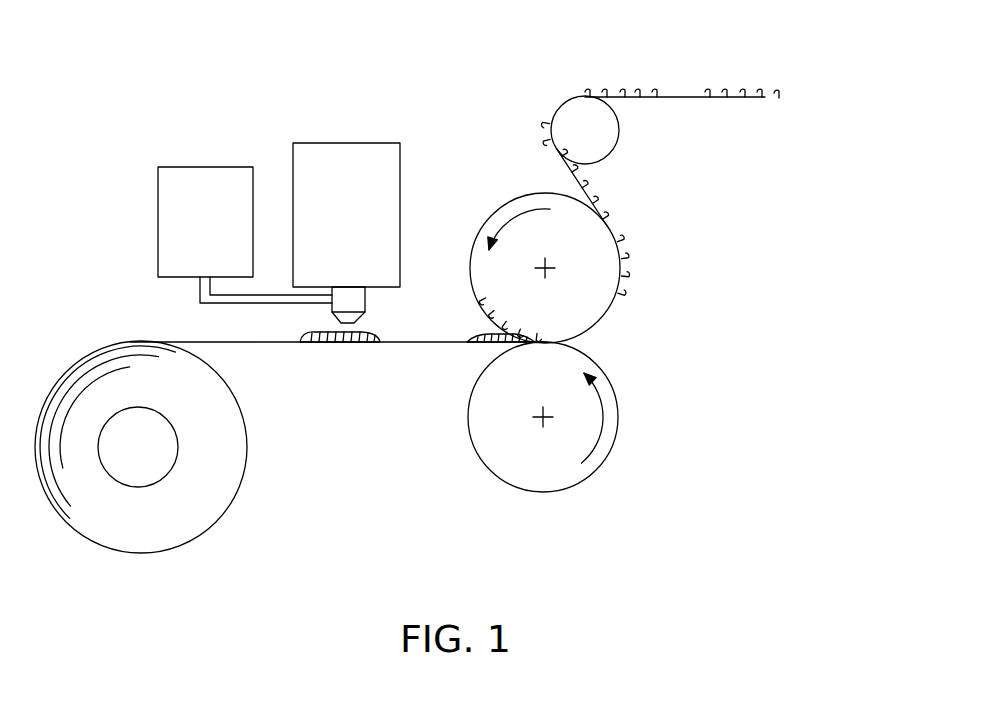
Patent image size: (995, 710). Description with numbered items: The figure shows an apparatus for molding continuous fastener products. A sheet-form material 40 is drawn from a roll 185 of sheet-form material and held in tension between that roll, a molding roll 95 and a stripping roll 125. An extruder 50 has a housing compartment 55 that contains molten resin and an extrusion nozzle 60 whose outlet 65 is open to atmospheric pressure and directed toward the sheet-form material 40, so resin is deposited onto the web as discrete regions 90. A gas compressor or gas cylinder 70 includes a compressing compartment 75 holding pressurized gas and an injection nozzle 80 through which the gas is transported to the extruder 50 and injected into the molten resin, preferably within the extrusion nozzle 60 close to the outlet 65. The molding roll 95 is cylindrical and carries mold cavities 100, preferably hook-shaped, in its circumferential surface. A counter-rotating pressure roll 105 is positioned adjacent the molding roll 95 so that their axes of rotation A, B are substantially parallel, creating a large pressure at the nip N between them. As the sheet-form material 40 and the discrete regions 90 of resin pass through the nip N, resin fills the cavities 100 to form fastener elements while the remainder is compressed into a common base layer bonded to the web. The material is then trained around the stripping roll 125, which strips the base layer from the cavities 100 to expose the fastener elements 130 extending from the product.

The sheet-form material 40 is at (270, 342).
The extruder 50 is at (374, 183).
The housing compartment 55 is at (372, 203).
The extrusion nozzle 60 is at (363, 312).
The outlet 65 is at (353, 322).
The gas compressor or gas cylinder 70 is at (204, 205).
The compressing compartment 75 is at (168, 231).
The injection nozzle 80 is at (205, 304).
The discrete regions of molten resin 90 is at (300, 336).
The molding roll 95 is at (590, 262).
The mold cavities 100 is at (607, 223).
The counter-rotating pressure roll 105 is at (550, 473).
The stripping roll 125 is at (587, 118).
The fastener elements 130 is at (780, 85).
The roll of sheet-form material 185 is at (173, 530).
The axis of rotation of molding roll A is at (555, 273).
The axis of rotation of pressure roll B is at (540, 418).
The nip N is at (545, 343).